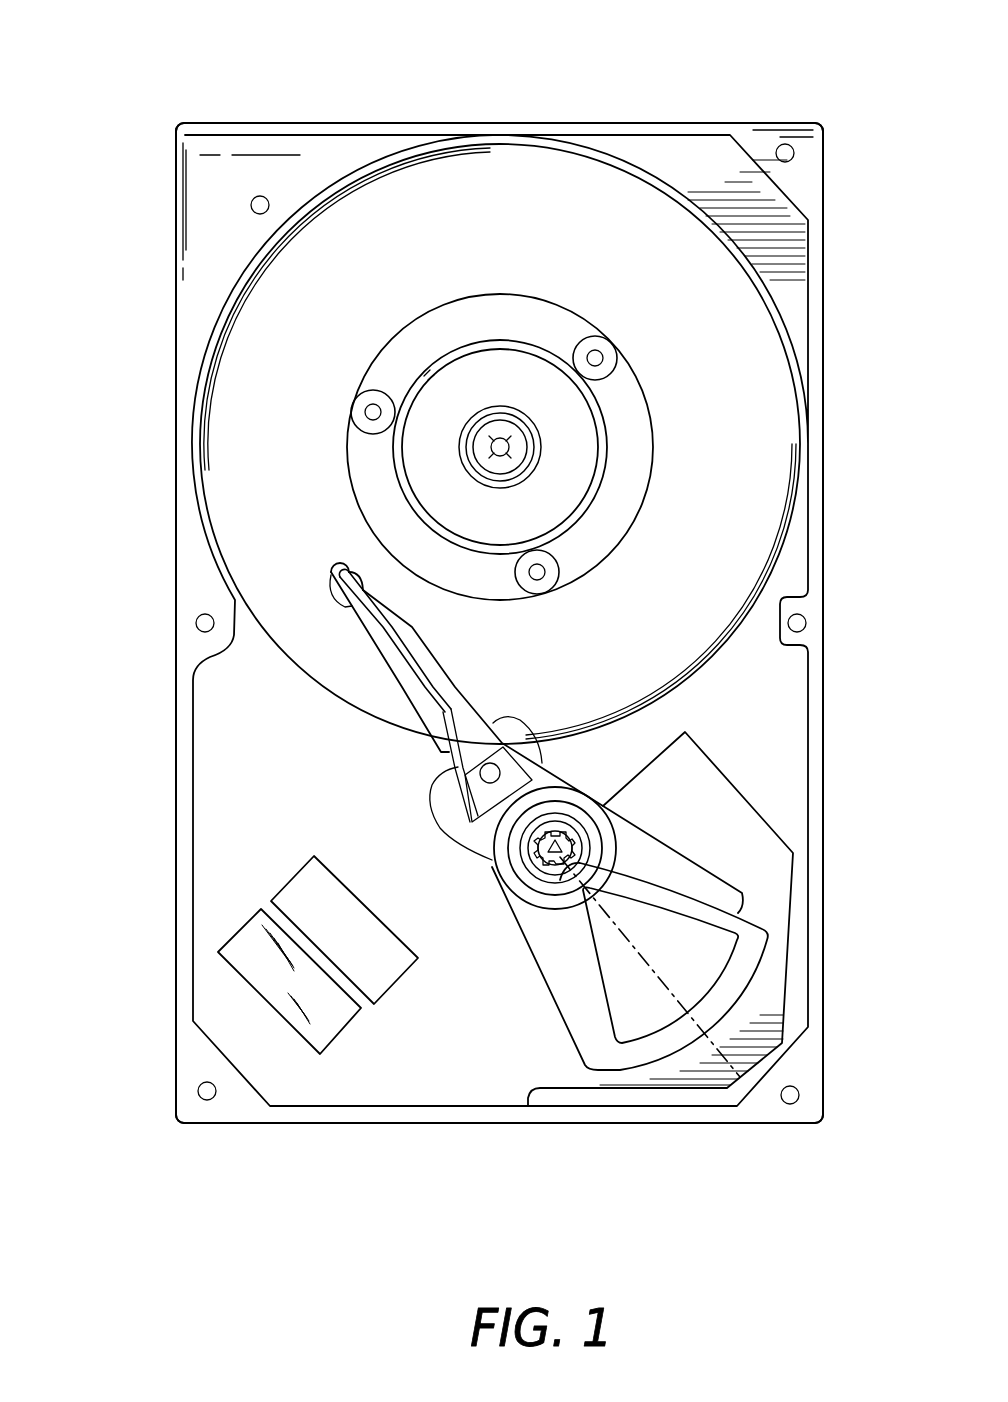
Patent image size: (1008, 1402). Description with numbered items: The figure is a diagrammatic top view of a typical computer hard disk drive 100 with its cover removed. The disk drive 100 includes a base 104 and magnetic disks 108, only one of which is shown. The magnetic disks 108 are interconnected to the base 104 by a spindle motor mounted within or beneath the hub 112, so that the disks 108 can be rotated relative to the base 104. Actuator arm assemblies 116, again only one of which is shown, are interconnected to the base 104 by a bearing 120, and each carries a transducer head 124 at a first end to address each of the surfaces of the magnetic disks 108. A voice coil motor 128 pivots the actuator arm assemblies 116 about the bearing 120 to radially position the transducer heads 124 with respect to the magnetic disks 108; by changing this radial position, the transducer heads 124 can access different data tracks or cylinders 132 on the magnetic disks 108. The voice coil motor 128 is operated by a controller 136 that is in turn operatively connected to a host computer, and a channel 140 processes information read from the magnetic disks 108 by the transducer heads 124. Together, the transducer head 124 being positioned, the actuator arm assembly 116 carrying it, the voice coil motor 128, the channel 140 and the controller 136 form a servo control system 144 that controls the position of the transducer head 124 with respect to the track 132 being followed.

The disk drive 100 is at (512, 98).
The base 104 is at (788, 719).
The magnetic disks 108 is at (772, 412).
The hub 112 is at (484, 459).
The actuator arm assemblies 116 is at (395, 738).
The bearing 120 is at (553, 857).
The transducer head 124 is at (212, 585).
The voice coil motor 128 is at (623, 1053).
The data tracks or cylinders 132 is at (783, 511).
The controller 136 is at (270, 992).
The channel 140 is at (287, 895).
The servo control system 144 is at (327, 820).